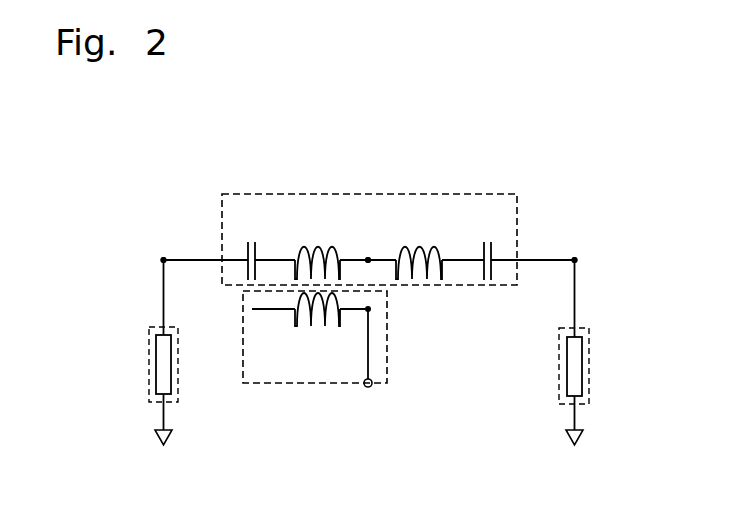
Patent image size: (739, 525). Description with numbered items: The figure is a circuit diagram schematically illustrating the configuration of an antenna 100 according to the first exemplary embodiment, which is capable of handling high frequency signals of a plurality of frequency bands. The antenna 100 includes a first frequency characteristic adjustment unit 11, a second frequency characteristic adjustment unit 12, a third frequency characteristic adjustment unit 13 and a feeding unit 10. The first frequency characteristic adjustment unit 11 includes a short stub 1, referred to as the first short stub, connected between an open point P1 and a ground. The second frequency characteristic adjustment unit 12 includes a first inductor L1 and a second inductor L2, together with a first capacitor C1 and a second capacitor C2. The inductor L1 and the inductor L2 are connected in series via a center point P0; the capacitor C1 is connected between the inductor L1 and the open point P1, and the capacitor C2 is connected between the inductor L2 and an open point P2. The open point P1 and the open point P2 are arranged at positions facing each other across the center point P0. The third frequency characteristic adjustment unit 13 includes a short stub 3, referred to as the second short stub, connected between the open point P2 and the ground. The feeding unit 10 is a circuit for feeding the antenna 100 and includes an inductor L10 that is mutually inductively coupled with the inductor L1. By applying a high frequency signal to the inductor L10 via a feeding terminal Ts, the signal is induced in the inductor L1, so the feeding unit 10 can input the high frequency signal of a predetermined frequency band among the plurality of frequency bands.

The antenna 100 is at (367, 73).
The second frequency characteristic adjustment unit 12 is at (455, 193).
The feeding unit 10 is at (300, 386).
The short stub 1 is at (150, 347).
The first frequency characteristic adjustment unit 11 is at (150, 392).
The short stub 3 is at (586, 350).
The third frequency characteristic adjustment unit 13 is at (588, 393).
The open point P1 is at (164, 257).
The open point P2 is at (575, 257).
The center point P0 is at (369, 262).
The first capacitor C1 is at (253, 245).
The second capacitor C2 is at (488, 245).
The first inductor L1 is at (317, 244).
The second inductor L2 is at (419, 244).
The inductor L10 is at (310, 325).
The feeding terminal Ts is at (372, 388).